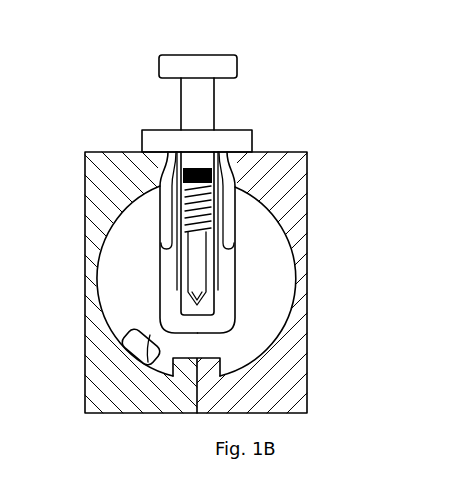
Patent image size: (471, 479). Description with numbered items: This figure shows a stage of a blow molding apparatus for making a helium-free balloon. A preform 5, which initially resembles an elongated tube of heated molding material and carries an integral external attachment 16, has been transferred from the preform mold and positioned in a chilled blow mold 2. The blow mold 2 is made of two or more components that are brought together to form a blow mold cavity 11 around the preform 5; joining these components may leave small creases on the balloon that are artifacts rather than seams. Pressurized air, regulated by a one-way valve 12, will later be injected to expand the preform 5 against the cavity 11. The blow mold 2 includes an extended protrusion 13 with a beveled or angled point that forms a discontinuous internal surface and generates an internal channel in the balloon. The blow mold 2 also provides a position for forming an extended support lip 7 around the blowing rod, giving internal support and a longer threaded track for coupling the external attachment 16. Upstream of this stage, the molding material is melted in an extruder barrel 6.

The blow mold 2 is at (85, 383).
The preform 5 is at (253, 152).
The extruder barrel 6 is at (170, 157).
The extended support lip 7 is at (158, 223).
The external attachment 16 is at (230, 198).
The blow mold cavity 11 is at (268, 325).
The one-way valve 12 is at (190, 300).
The extended protrusion 13 is at (150, 352).